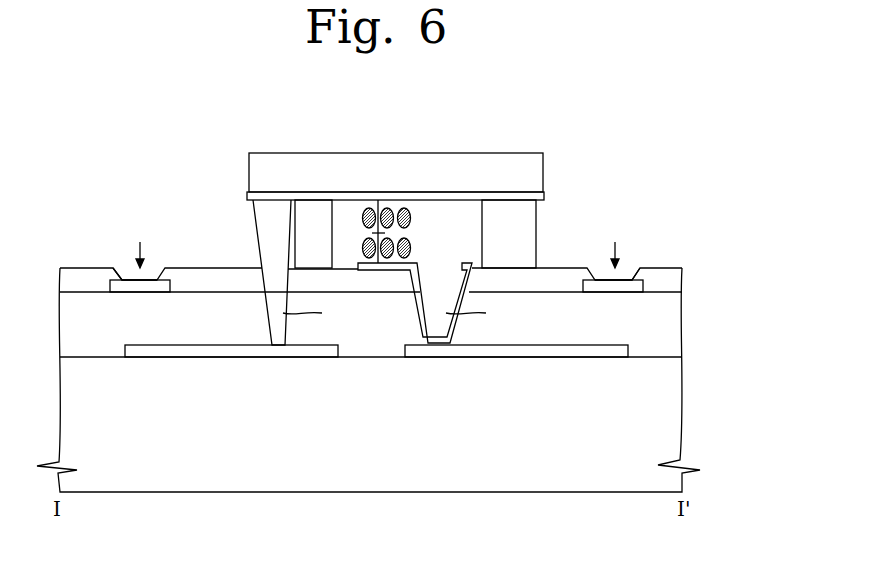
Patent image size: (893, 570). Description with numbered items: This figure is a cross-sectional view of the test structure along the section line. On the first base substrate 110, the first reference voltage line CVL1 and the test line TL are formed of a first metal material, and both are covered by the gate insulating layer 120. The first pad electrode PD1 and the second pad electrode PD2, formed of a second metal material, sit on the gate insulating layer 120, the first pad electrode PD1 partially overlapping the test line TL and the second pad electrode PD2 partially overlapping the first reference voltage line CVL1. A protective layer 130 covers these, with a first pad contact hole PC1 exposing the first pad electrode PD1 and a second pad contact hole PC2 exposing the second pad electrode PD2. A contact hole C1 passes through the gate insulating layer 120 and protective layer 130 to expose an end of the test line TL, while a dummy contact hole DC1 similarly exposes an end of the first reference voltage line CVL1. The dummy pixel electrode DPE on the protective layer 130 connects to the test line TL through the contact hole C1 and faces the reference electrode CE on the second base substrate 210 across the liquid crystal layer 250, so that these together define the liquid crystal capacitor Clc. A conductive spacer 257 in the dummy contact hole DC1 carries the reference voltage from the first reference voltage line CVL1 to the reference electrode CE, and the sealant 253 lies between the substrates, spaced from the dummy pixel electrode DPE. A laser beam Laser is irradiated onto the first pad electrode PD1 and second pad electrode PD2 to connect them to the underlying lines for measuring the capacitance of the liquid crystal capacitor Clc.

The first base substrate 110 is at (675, 385).
The gate insulating layer 120 is at (668, 325).
The protective layer 130 is at (668, 278).
The second base substrate 210 is at (545, 170).
The reference electrode CE is at (545, 197).
The liquid crystal layer 250 is at (445, 209).
The sealant 253 is at (312, 210).
The conductive spacer 257 is at (258, 237).
The liquid crystal capacitor Clc is at (392, 230).
The dummy pixel electrode DPE is at (423, 310).
The contact hole C1 is at (440, 313).
The dummy contact hole DC1 is at (277, 313).
The test line TL is at (493, 352).
The first reference voltage line CVL1 is at (232, 353).
The first pad electrode PD1 is at (606, 289).
The second pad electrode PD2 is at (144, 289).
The first pad contact hole PC1 is at (634, 257).
The second pad contact hole PC2 is at (113, 259).
The laser beam Laser is at (369, 246).